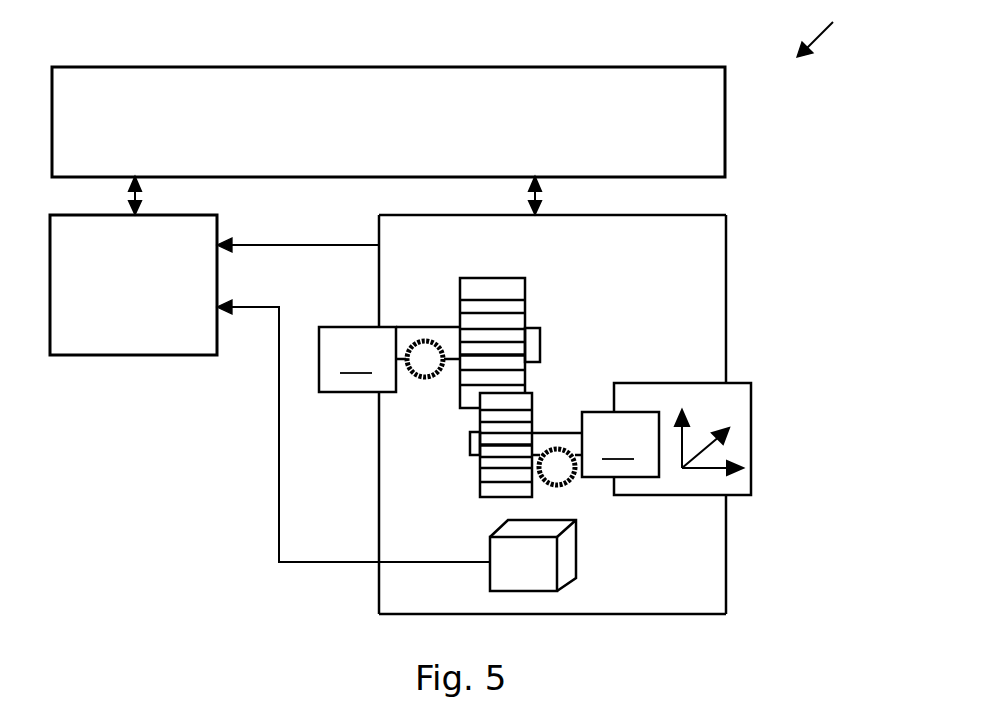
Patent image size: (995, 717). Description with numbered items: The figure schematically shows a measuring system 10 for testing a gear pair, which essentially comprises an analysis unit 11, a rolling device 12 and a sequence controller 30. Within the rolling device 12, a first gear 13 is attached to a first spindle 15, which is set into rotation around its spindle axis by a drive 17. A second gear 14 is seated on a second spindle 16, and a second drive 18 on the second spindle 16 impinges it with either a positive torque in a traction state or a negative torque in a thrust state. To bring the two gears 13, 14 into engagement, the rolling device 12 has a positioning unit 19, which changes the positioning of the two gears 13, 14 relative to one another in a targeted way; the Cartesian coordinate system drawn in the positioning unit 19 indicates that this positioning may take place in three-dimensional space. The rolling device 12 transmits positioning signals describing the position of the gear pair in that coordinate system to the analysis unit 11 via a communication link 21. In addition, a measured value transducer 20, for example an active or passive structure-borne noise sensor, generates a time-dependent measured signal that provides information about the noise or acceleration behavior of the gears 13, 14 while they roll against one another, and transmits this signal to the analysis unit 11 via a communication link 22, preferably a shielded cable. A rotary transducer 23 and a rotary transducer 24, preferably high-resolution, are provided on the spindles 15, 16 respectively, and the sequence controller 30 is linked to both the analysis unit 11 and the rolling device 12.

The measuring system 10 is at (826, 28).
The analysis unit 11 is at (137, 337).
The rolling device 12 is at (716, 253).
The first gear 13 is at (518, 288).
The second gear 14 is at (488, 470).
The first spindle 15 is at (425, 334).
The second spindle 16 is at (553, 440).
The drive 17 is at (357, 359).
The second drive 18 is at (620, 444).
The positioning unit 19 is at (644, 397).
The measured value transducer 20 is at (533, 575).
The communication link 21 is at (318, 247).
The communication link 22 is at (279, 465).
The rotary transducer 23 is at (423, 372).
The rotary transducer 24 is at (572, 485).
The sequence controller 30 is at (716, 160).